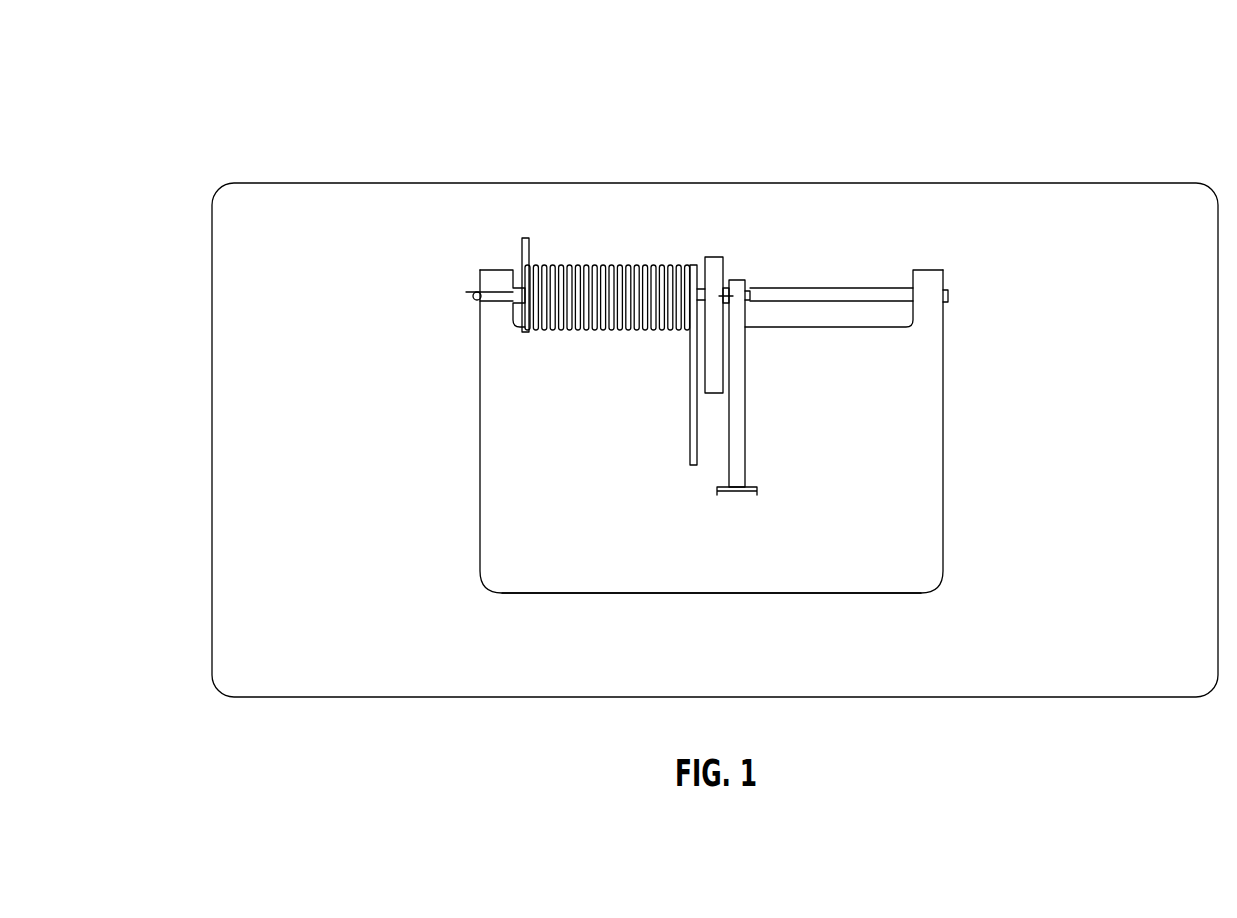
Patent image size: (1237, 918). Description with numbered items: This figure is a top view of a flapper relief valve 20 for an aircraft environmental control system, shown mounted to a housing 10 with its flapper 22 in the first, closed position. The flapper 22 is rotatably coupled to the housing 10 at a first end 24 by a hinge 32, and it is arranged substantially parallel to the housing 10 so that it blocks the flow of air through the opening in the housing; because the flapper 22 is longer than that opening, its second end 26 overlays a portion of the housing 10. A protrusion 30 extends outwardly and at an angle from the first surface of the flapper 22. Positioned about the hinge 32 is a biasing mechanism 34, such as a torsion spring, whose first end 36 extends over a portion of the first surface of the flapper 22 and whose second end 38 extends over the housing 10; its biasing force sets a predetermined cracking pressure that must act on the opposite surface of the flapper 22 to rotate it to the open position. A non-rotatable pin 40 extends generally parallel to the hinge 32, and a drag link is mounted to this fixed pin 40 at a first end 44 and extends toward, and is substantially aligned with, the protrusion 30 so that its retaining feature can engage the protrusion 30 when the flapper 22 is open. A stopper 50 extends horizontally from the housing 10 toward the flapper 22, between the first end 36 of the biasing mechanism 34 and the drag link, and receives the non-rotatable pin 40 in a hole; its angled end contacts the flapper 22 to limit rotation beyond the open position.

The housing 10 is at (308, 203).
The flapper relief valve 20 is at (1155, 112).
The flapper 22 is at (500, 480).
The first end 24 is at (498, 277).
The second end 26 is at (505, 594).
The protrusion 30 is at (737, 495).
The hinge 32 is at (470, 296).
The biasing mechanism 34 is at (633, 267).
The first end 36 is at (690, 430).
The second end 38 is at (530, 248).
The non-rotatable pin 40 is at (842, 292).
The first end 44 is at (731, 287).
The stopper 50 is at (717, 265).